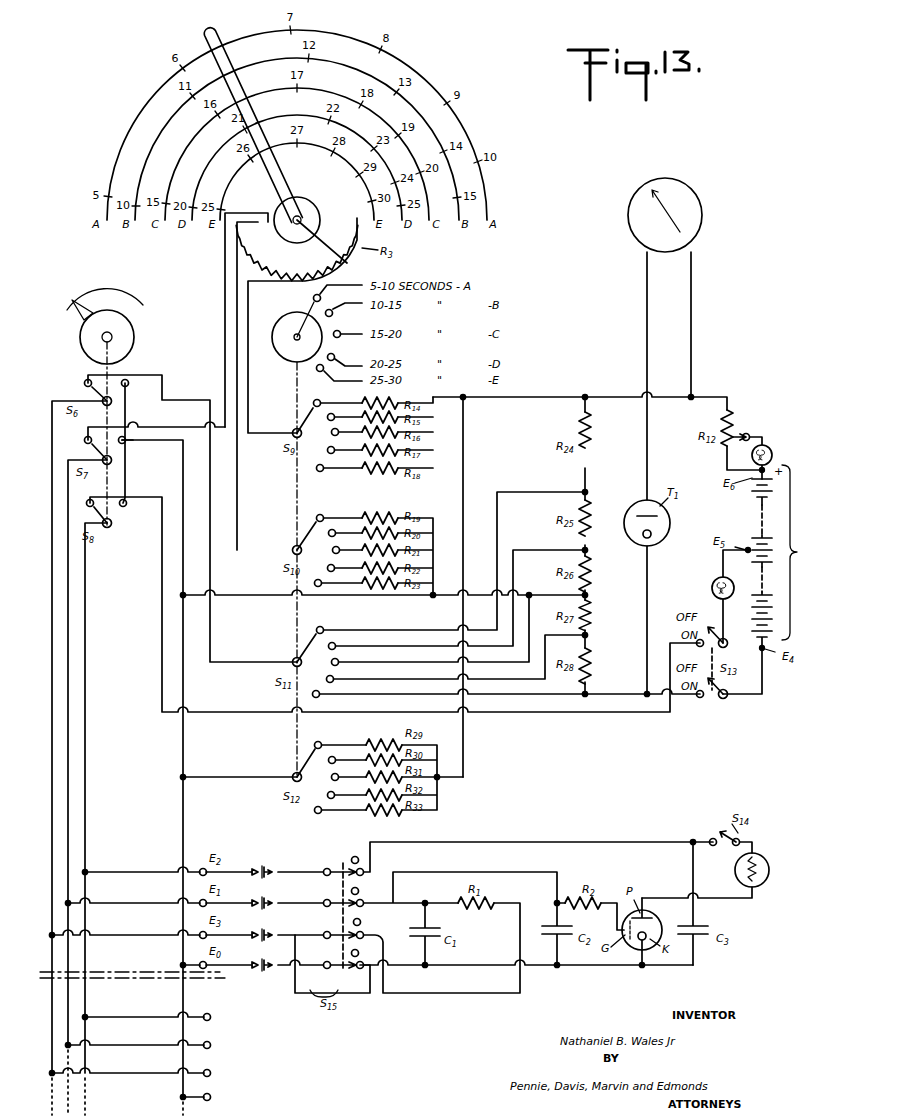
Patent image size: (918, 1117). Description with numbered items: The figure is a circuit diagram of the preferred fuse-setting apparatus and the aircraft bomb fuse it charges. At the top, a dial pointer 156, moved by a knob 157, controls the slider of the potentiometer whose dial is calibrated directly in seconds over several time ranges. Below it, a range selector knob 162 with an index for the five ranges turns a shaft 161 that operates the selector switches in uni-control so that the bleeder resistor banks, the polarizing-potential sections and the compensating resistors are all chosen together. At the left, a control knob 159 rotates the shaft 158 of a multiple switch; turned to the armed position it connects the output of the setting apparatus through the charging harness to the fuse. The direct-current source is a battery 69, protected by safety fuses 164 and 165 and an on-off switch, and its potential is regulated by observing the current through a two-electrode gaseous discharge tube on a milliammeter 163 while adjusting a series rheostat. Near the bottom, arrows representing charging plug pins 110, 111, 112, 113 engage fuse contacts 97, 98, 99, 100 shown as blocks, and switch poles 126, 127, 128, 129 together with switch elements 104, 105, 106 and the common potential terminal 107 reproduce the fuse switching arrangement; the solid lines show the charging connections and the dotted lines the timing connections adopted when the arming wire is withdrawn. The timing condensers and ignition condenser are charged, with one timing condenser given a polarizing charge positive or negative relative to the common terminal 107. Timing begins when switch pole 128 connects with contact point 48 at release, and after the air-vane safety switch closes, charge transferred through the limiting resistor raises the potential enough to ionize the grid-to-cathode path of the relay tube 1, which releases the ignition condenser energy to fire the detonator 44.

The dial pointer 156 is at (220, 32).
The knob 157 is at (306, 210).
The shaft 158 is at (133, 491).
The control knob 159 is at (133, 336).
The shaft 161 is at (295, 605).
The range selector knob 162 is at (287, 318).
The milliammeter 163 is at (705, 222).
The safety fuse 164 is at (771, 449).
The safety fuse 165 is at (712, 588).
The battery 69 is at (768, 579).
The detonator 44 is at (766, 862).
The contact point 48 is at (361, 920).
The fuse contact 97 is at (266, 868).
The fuse contact 98 is at (266, 899).
The fuse contact 99 is at (266, 930).
The fuse contact 100 is at (266, 960).
The switch element 104 is at (356, 857).
The switch element 105 is at (359, 890).
The switch element 106 is at (415, 927).
The common potential terminal 107 is at (358, 966).
The charging plug pin 110 is at (255, 862).
The charging plug pin 111 is at (255, 894).
The charging plug pin 112 is at (255, 925).
The charging plug pin 113 is at (255, 956).
The switch pole 126 is at (327, 868).
The switch pole 127 is at (327, 899).
The switch pole 128 is at (327, 931).
The switch pole 129 is at (327, 961).
The relay tube 1 is at (660, 925).